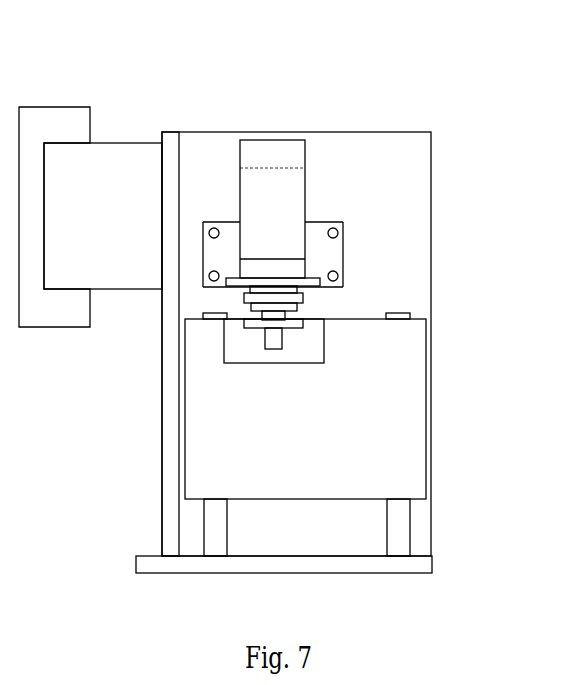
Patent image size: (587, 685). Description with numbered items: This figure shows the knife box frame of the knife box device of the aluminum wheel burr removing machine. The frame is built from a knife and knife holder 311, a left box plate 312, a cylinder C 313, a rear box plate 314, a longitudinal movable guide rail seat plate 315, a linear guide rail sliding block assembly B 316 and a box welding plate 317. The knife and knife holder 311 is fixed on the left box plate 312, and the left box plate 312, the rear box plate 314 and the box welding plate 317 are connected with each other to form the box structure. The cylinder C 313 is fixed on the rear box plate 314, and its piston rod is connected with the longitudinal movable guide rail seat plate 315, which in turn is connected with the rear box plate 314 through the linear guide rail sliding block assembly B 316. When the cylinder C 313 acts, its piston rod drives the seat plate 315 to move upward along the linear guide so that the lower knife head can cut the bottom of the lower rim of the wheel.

The knife and knife holder 311 is at (82, 143).
The left box plate 312 is at (170, 143).
The cylinder C 313 is at (272, 168).
The rear box plate 314 is at (386, 143).
The longitudinal movable guide rail seat plate 315 is at (386, 337).
The linear guide rail sliding block assembly B 316 is at (405, 523).
The box welding plate 317 is at (388, 565).